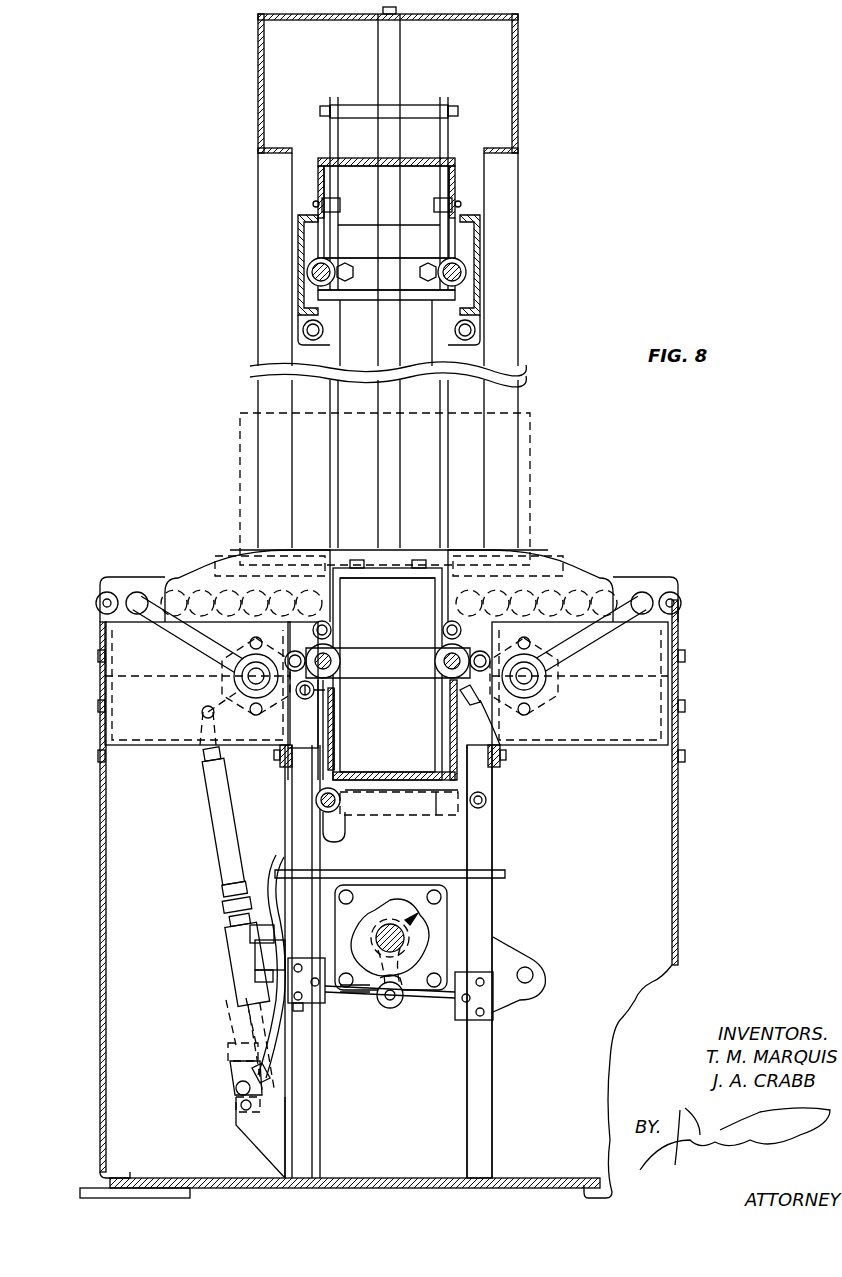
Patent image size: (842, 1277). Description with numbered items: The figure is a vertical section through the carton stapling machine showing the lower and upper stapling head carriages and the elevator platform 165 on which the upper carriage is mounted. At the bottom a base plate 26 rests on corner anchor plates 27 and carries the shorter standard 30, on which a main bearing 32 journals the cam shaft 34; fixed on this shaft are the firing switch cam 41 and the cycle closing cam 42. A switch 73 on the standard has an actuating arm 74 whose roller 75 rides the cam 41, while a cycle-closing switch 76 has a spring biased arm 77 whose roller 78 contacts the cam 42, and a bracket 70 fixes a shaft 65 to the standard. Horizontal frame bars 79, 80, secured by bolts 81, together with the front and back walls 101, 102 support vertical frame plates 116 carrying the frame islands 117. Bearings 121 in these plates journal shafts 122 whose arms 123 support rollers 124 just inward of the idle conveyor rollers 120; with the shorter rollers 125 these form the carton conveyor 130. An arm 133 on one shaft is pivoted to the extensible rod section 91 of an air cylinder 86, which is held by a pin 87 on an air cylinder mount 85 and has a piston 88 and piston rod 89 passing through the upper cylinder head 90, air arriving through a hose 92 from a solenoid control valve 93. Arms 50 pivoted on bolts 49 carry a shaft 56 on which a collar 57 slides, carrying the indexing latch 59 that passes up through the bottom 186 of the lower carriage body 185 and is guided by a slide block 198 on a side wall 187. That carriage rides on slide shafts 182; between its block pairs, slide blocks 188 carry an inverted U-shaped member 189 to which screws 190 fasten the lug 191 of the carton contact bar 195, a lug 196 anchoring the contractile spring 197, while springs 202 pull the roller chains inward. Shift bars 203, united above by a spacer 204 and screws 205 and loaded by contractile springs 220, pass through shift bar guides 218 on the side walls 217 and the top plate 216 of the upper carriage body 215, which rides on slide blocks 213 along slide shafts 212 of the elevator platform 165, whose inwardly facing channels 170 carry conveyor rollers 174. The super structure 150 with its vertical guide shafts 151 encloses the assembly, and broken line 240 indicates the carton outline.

The super structure 150 is at (518, 42).
The vertical guide shafts 151 is at (400, 44).
The shift bars 203 is at (438, 97).
The spacer 204 is at (345, 116).
The screws 205 is at (320, 110).
The top plate 216 is at (365, 168).
The upper carriage body 215 is at (518, 180).
The shift bar guides 218 is at (434, 205).
The side walls 217 is at (440, 236).
The elevator platform 165 is at (525, 228).
The inwardly facing channels 170 is at (298, 245).
The left pair of slide blocks 213 is at (428, 272).
The horizontal slide shafts 212 is at (308, 276).
The conveyor rollers 174 is at (305, 337).
The broken line 240 is at (530, 490).
The screws 190 is at (420, 558).
The lug 191 is at (440, 560).
The carton contact bar 195 is at (525, 548).
The frame islands 117 is at (195, 575).
The carton conveyor 130 is at (730, 548).
The rollers 124 is at (135, 592).
The idle conveyor rollers 120 is at (97, 603).
The shorter rollers 125 is at (215, 615).
The arms 123 is at (205, 655).
The bearings 121 is at (245, 700).
The shafts 122 is at (245, 678).
The arm 133 is at (210, 700).
The vertical frame plates 116 is at (148, 760).
The back wall 102 is at (100, 815).
The front wall 101 is at (680, 805).
The slide blocks 188 is at (448, 657).
The inverted U-shaped member 189 is at (388, 578).
The contractile springs 202 is at (440, 632).
The contractile springs 220 is at (332, 652).
The horizontal slide shafts 182 is at (440, 662).
The lug 196 is at (318, 688).
The contractile spring 197 is at (302, 700).
The stapling head indexing latch 59 is at (335, 720).
The slide block 198 is at (335, 752).
The side walls 187 is at (300, 733).
The bolts 81 is at (278, 758).
The horizontal frame bar 80 is at (285, 775).
The horizontal frame bar 79 is at (495, 775).
The collar 57 is at (315, 802).
The shaft 56 is at (322, 815).
The bolts 49 is at (490, 808).
The arms 50 is at (452, 820).
The bottom 186 is at (390, 782).
The stapling head carriage body 185 is at (425, 815).
The cam shaft 34 is at (378, 935).
The stapling firing head switch cam 41 is at (393, 905).
The main bearing 32 is at (440, 920).
The extensible rod section 91 is at (218, 850).
The upper cylinder head 90 is at (222, 910).
The electric solenoid control valve 93 is at (238, 952).
The piston rod 89 is at (225, 1003).
The piston 88 is at (230, 1055).
The air cylinder 86 is at (235, 1072).
The pin 87 is at (238, 1105).
The air cylinder mount 85 is at (250, 1145).
The hose 92 is at (270, 1060).
The spring biased arm 77 is at (310, 1005).
The cycle closing cam 42 is at (352, 982).
The roller 75 is at (380, 1005).
The roller 78 is at (398, 1008).
The actuating arm 74 is at (442, 1003).
The switch 73 is at (462, 1020).
The bracket 70 is at (505, 1010).
The shaft 65 is at (534, 975).
The cycle-closing switch 76 is at (305, 1030).
The standard 30 is at (485, 1080).
The base plate 26 is at (345, 1188).
The corner anchor plates 27 is at (185, 1198).